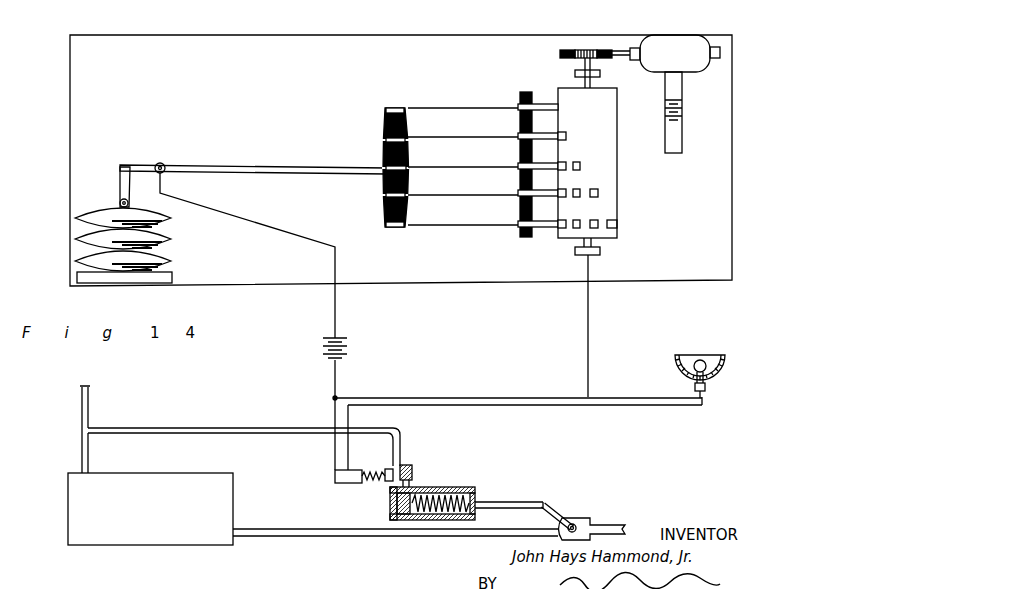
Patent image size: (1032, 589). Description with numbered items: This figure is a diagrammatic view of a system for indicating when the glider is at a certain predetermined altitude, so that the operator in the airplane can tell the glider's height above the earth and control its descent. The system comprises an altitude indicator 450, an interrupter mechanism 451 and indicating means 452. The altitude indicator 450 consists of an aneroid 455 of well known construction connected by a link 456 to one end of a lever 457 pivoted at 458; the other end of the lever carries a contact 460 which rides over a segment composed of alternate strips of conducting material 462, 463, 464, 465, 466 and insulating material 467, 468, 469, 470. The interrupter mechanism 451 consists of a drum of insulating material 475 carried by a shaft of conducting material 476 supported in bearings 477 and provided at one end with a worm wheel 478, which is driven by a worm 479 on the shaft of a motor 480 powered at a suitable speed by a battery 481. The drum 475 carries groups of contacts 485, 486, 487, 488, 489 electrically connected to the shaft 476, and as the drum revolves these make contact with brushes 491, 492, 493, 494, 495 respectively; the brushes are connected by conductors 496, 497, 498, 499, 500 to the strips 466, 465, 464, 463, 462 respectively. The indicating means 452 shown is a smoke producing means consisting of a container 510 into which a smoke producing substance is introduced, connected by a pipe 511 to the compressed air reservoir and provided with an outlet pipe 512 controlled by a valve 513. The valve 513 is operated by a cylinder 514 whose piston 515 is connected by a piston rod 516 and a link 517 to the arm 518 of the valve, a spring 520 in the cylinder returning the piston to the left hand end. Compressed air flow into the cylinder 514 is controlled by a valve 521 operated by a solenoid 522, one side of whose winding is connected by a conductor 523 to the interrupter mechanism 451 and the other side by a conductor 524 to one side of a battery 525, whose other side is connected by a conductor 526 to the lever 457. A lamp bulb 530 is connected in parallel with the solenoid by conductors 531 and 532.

The altitude indicator 450 is at (162, 48).
The interrupter mechanism 451 is at (732, 165).
The indicating means 452 is at (641, 458).
The aneroid 455 is at (172, 237).
The link 456 is at (120, 183).
The lever 457 is at (234, 166).
The pivot 458 is at (156, 166).
The contact 460 is at (386, 166).
The conducting strip 462 is at (384, 110).
The conducting strip 463 is at (384, 140).
The conducting strip 464 is at (384, 171).
The conducting strip 465 is at (384, 197).
The conducting strip 466 is at (384, 225).
The insulating strip 467 is at (383, 125).
The insulating strip 468 is at (408, 142).
The insulating strip 469 is at (384, 185).
The insulating strip 470 is at (408, 205).
The drum of insulating material 475 is at (617, 235).
The shaft of conducting material 476 is at (600, 240).
The bearings 477 is at (573, 75).
The worm wheel 478 is at (576, 58).
The worm 479 is at (574, 49).
The motor 480 is at (680, 38).
The battery 481 is at (683, 110).
The group of contacts 485 is at (617, 223).
The group of contacts 486 is at (617, 193).
The group of contacts 487 is at (617, 167).
The group of contacts 488 is at (617, 136).
The group of contacts 489 is at (617, 105).
The brush 491 is at (518, 222).
The brush 492 is at (518, 191).
The brush 493 is at (518, 164).
The brush 494 is at (518, 134).
The brush 495 is at (518, 104).
The conductor 496 is at (432, 214).
The conductor 497 is at (429, 184).
The conductor 498 is at (429, 157).
The conductor 499 is at (429, 126).
The conductor 500 is at (423, 97).
The container 510 is at (157, 473).
The pipe 511 is at (88, 404).
The outlet pipe 512 is at (327, 537).
The valve 513 is at (580, 524).
The cylinder 514 is at (481, 485).
The piston 515 is at (392, 516).
The piston rod 516 is at (486, 509).
The link 517 is at (508, 500).
The arm 518 is at (556, 507).
The spring 520 is at (437, 487).
The valve 521 is at (412, 460).
The solenoid 522 is at (347, 484).
The conductor 523 is at (588, 306).
The conductor 524 is at (337, 428).
The battery 525 is at (350, 347).
The conductor 526 is at (337, 296).
The lamp bulb 530 is at (698, 355).
The conductor 531 is at (623, 407).
The conductor 532 is at (615, 397).